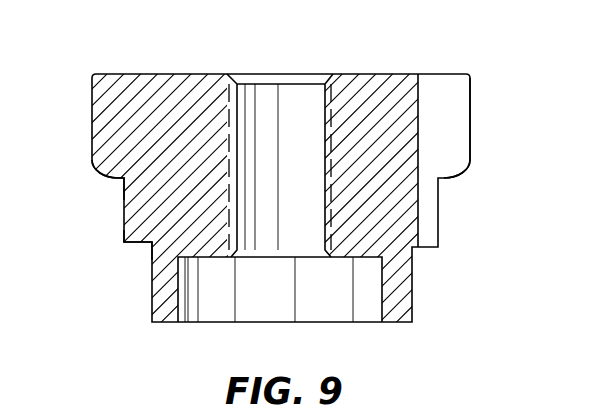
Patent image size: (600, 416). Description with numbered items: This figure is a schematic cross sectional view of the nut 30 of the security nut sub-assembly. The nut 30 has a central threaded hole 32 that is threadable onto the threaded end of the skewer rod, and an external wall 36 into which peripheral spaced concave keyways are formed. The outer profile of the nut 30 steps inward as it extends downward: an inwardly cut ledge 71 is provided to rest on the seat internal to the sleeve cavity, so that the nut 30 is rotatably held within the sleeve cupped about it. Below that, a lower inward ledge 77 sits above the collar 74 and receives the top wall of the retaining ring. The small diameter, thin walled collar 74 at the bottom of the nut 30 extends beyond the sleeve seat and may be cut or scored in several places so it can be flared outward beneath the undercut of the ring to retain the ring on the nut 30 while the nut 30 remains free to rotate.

The nut 30 is at (453, 55).
The threaded hole 32 is at (310, 161).
The external wall 36 is at (470, 130).
The inwardly cut ledge 71 is at (121, 179).
The lower inward ledge 77 is at (150, 245).
The collar 74 is at (413, 292).